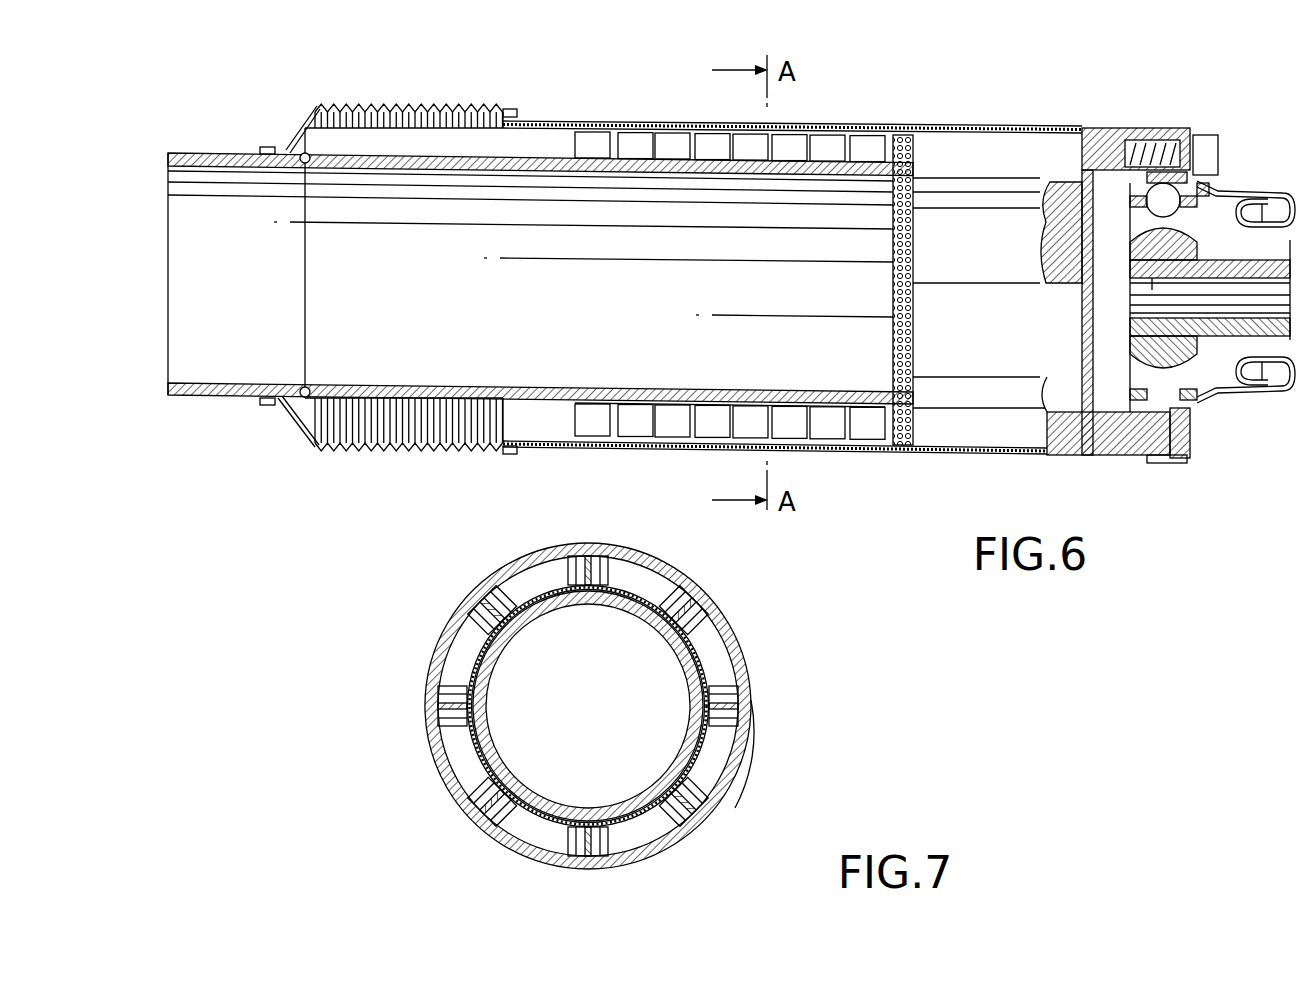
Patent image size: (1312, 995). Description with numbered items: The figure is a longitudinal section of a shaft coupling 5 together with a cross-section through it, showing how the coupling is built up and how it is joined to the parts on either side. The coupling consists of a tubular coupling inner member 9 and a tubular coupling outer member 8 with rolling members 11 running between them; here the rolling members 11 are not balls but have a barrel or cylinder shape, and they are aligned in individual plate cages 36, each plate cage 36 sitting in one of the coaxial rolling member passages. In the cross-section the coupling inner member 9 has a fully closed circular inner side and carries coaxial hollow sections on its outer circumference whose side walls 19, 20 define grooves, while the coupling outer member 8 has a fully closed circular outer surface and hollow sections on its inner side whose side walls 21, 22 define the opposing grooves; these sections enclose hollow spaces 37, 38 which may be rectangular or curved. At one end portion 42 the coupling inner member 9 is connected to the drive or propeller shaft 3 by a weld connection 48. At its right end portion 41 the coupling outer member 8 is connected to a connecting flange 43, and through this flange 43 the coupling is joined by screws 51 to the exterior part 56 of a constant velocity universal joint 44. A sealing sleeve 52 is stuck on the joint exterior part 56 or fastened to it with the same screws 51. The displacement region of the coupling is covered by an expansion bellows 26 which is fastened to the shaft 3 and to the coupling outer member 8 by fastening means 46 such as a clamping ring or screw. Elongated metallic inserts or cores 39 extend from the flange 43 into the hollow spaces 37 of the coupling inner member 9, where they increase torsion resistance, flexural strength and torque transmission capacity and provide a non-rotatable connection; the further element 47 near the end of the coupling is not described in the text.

In FIG. 6, the drive or propeller shaft 3 is at (240, 397).
In FIG. 6, the shaft coupling 5 is at (455, 484).
In FIG. 6, the coupling outer member 8 is at (968, 126).
In FIG. 7, the coupling outer member 8 is at (655, 548).
In FIG. 6, the coupling inner member 9 is at (660, 388).
In FIG. 7, the coupling inner member 9 is at (612, 598).
In FIG. 6, the rolling members 11 is at (598, 132).
In FIG. 7, the rolling members 11 is at (450, 690).
In FIG. 7, the side wall 19 is at (715, 680).
In FIG. 7, the side wall 20 is at (440, 775).
In FIG. 7, the side wall 21 is at (748, 748).
In FIG. 7, the side wall 22 is at (440, 665).
In FIG. 6, the expansion bellows 26 is at (385, 108).
In FIG. 6, the plate cage 36 is at (605, 448).
In FIG. 7, the plate cage 36 is at (690, 597).
In FIG. 7, the hollow space 37 is at (712, 766).
In FIG. 7, the hollow space 38 is at (632, 826).
In FIG. 6, the metallic inserts or cores 39 is at (968, 452).
In FIG. 6, the right end portion 41 is at (1086, 118).
In FIG. 6, the end portion 42 is at (318, 380).
In FIG. 6, the connecting flange 43 is at (1100, 458).
In FIG. 6, the constant velocity universal joint 44 is at (1244, 178).
In FIG. 6, the fastening means 46 is at (508, 110).
In FIG. 6, the perforated plate 47 is at (905, 140).
In FIG. 6, the weld connection 48 is at (300, 153).
In FIG. 6, the screws 51 is at (1205, 135).
In FIG. 6, the sealing sleeve 52 is at (1237, 415).
In FIG. 6, the exterior part of the constant velocity universal joint 56 is at (1168, 140).